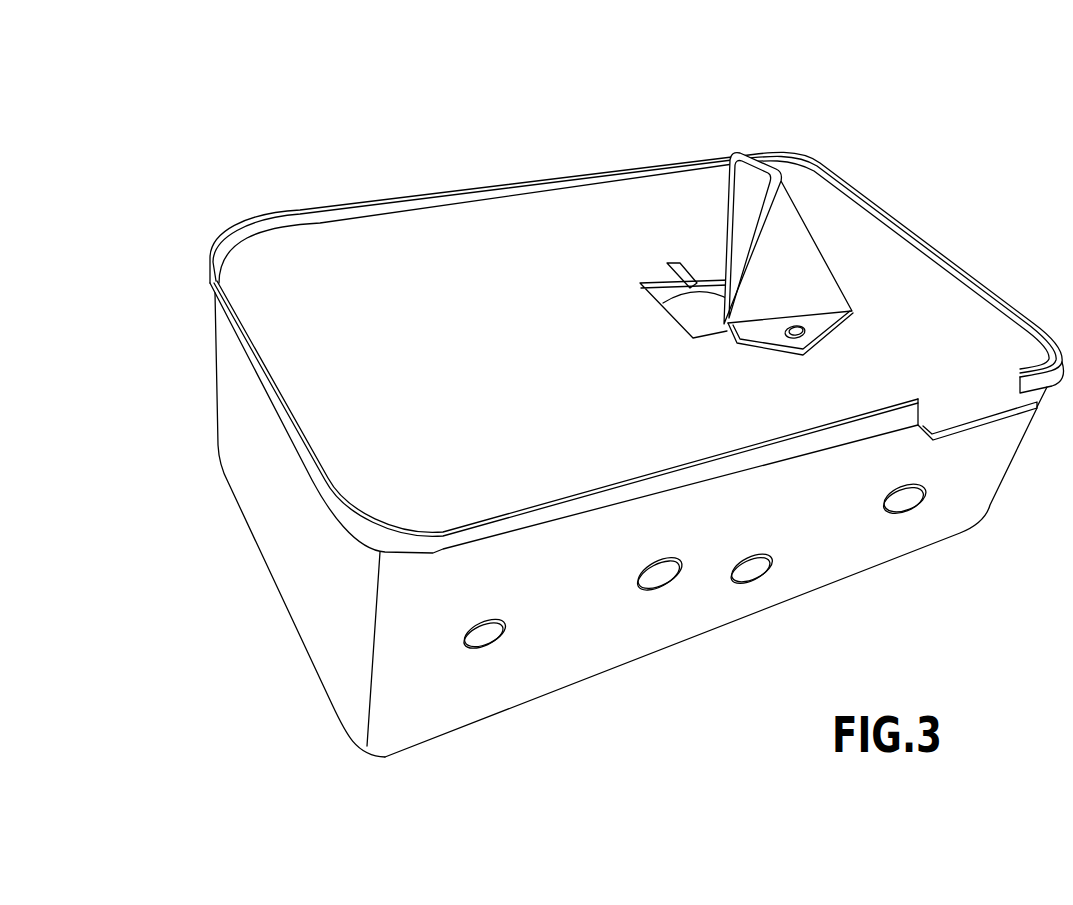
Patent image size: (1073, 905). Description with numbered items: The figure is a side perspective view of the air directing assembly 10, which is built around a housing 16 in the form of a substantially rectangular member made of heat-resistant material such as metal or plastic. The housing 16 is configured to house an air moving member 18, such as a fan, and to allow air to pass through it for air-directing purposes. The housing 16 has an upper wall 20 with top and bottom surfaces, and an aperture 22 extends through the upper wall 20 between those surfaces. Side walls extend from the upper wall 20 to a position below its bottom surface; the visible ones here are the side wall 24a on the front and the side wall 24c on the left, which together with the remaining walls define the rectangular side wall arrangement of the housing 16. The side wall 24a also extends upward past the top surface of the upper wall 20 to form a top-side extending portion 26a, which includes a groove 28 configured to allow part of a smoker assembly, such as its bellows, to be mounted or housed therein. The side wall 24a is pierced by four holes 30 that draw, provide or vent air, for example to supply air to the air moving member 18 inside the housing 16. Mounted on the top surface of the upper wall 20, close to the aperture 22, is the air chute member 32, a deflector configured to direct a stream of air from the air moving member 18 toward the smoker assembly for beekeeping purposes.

The air directing assembly 10 is at (464, 84).
The housing 16 is at (228, 377).
The air moving member 18 is at (680, 303).
The upper wall 20 is at (448, 243).
The aperture 22 is at (692, 282).
The side wall 24a is at (588, 630).
The side wall 24c is at (283, 530).
The top-side extending portion 26a is at (443, 543).
The groove 28 is at (711, 160).
The hole 30 is at (490, 634).
The air chute member 32 is at (792, 262).